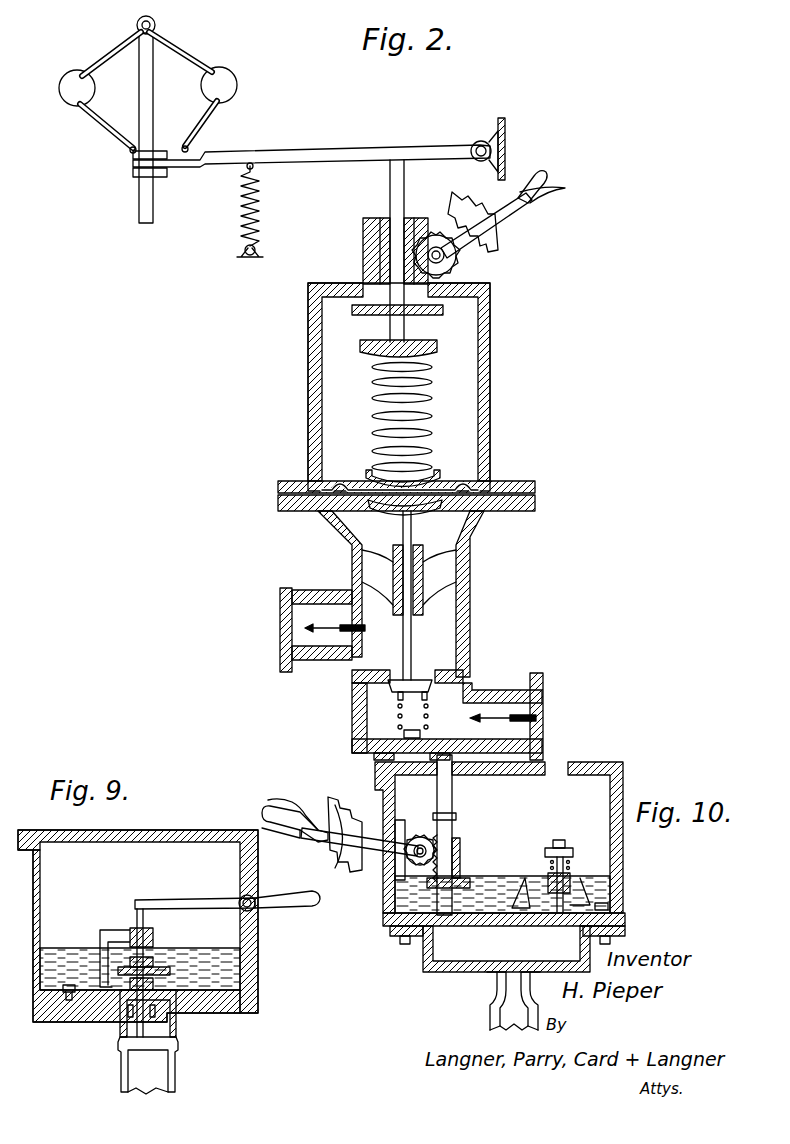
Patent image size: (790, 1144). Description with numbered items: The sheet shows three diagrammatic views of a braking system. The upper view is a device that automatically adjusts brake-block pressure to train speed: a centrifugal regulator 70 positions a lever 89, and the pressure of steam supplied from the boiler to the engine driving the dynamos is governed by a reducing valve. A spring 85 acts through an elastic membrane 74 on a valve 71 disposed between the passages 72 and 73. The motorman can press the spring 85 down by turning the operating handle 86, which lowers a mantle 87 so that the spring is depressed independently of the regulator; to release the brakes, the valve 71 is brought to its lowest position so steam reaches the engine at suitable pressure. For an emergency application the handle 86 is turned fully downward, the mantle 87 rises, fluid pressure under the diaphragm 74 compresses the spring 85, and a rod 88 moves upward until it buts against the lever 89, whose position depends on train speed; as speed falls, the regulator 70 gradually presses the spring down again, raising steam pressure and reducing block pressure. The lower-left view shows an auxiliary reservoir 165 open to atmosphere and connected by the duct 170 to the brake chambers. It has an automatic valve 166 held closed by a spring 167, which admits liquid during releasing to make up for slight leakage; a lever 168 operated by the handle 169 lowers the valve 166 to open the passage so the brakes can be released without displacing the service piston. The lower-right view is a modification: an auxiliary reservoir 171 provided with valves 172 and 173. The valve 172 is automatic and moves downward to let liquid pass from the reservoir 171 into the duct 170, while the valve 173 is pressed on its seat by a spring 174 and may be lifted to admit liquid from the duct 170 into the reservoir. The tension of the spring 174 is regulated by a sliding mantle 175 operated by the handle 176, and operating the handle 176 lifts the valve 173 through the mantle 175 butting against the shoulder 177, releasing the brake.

In FIG. 2, the centrifugal regulator 70 is at (193, 63).
In FIG. 2, the lever 89 is at (284, 152).
In FIG. 2, the rod 88 is at (396, 170).
In FIG. 2, the operating handle 86 is at (538, 180).
In FIG. 2, the mantle 87 is at (376, 258).
In FIG. 2, the spring 85 is at (425, 367).
In FIG. 2, the elastic membrane 74 is at (468, 490).
In FIG. 2, the passage 73 is at (290, 634).
In FIG. 2, the valve 71 is at (393, 695).
In FIG. 2, the passage 72 is at (545, 722).
In FIG. 10, the auxiliary reservoir 171 is at (595, 796).
In FIG. 10, the valve 172 is at (624, 909).
In FIG. 10, the valve 173 is at (452, 927).
In FIG. 10, the spring 174 is at (403, 940).
In FIG. 10, the sliding mantle 175 is at (400, 875).
In FIG. 10, the handle 176 is at (276, 826).
In FIG. 10, the shoulder 177 is at (437, 818).
In FIG. 10, the duct 170 is at (492, 1011).
In FIG. 9, the duct 170 is at (176, 1066).
In FIG. 9, the reservoir 165 is at (135, 850).
In FIG. 9, the lever 168 is at (198, 899).
In FIG. 9, the handle 169 is at (308, 906).
In FIG. 9, the spring 167 is at (126, 985).
In FIG. 9, the automatic valve 166 is at (143, 1041).